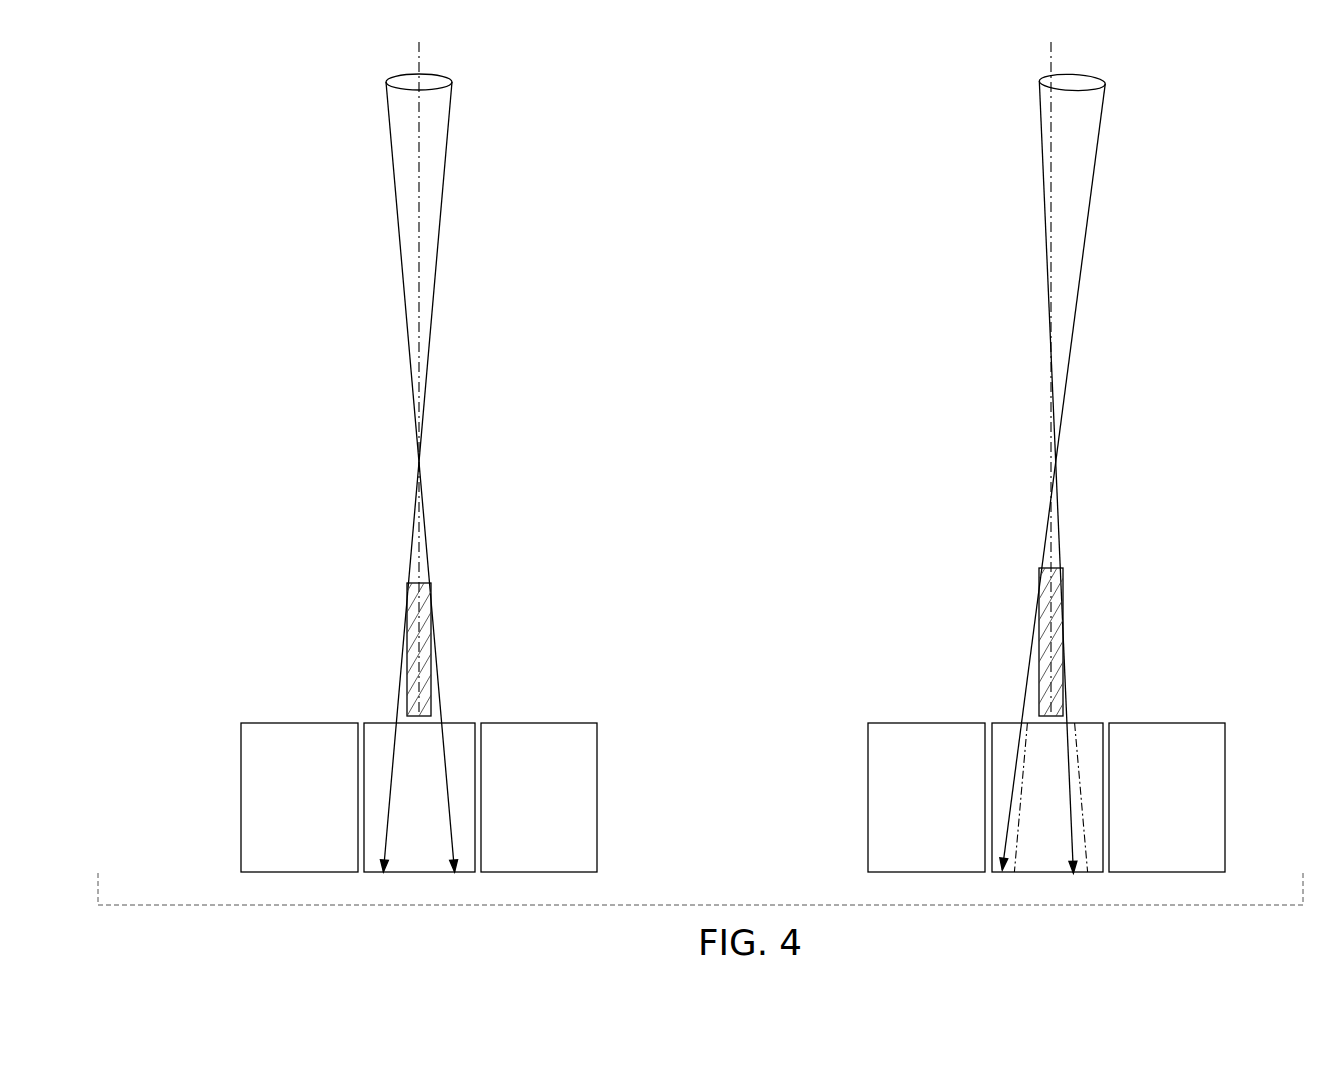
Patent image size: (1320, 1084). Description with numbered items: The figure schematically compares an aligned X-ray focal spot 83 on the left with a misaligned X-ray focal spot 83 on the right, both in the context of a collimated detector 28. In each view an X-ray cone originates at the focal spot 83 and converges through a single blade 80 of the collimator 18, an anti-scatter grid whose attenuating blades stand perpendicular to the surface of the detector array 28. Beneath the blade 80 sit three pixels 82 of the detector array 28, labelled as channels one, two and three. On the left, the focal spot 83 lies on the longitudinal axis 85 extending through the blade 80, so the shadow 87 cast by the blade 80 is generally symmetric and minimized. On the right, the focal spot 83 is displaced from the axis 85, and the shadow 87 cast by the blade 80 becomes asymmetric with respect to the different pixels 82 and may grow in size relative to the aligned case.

The collimator 18 is at (362, 628).
The detector array 28 is at (208, 780).
The blade 80 is at (432, 623).
The pixels 82 is at (703, 797).
The X-ray focal spot 83 is at (456, 83).
The longitudinal axis 85 is at (424, 207).
The shadow 87 is at (442, 742).